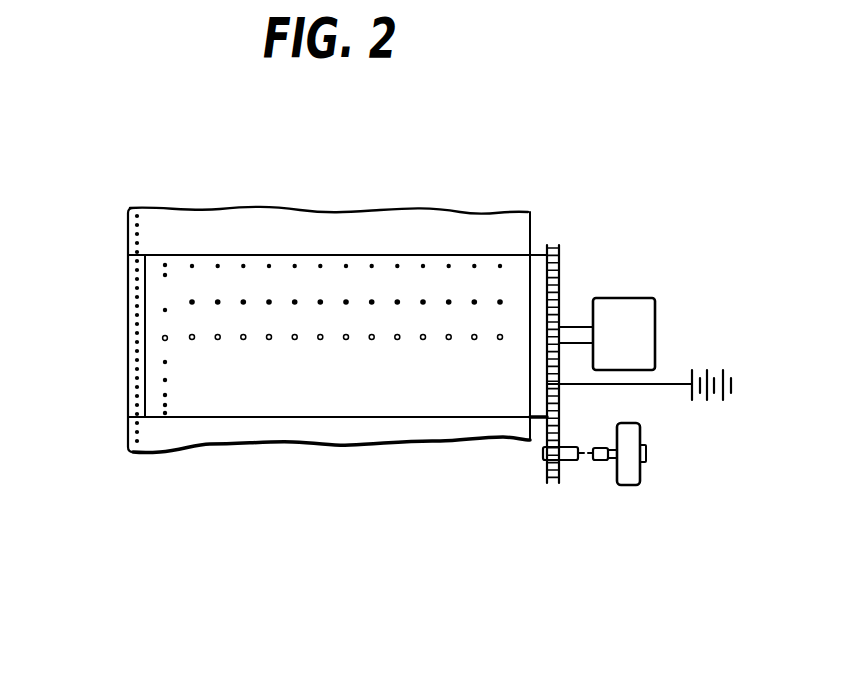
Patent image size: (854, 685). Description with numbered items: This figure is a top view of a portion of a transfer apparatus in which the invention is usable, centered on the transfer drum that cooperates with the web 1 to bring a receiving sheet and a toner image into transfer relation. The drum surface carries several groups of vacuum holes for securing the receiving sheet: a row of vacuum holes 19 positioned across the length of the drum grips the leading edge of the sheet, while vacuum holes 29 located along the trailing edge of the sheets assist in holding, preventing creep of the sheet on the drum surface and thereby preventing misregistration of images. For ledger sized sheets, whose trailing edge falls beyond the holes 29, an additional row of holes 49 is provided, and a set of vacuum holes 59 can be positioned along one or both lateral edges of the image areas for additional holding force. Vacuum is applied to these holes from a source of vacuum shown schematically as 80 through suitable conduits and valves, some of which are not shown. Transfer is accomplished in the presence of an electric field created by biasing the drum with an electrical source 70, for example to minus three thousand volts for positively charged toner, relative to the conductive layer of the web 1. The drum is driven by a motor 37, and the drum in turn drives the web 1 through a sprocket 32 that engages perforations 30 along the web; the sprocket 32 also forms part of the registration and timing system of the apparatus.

The web 1 is at (196, 436).
The vacuum holes 19 is at (498, 343).
The vacuum holes 29 is at (502, 302).
The perforations 30 is at (136, 215).
The sprocket 32 is at (137, 371).
The motor 37 is at (645, 468).
The additional row of holes 49 is at (502, 266).
The set of vacuum holes 59 is at (165, 293).
The electrical source 70 is at (725, 373).
The source of vacuum 80 is at (645, 328).